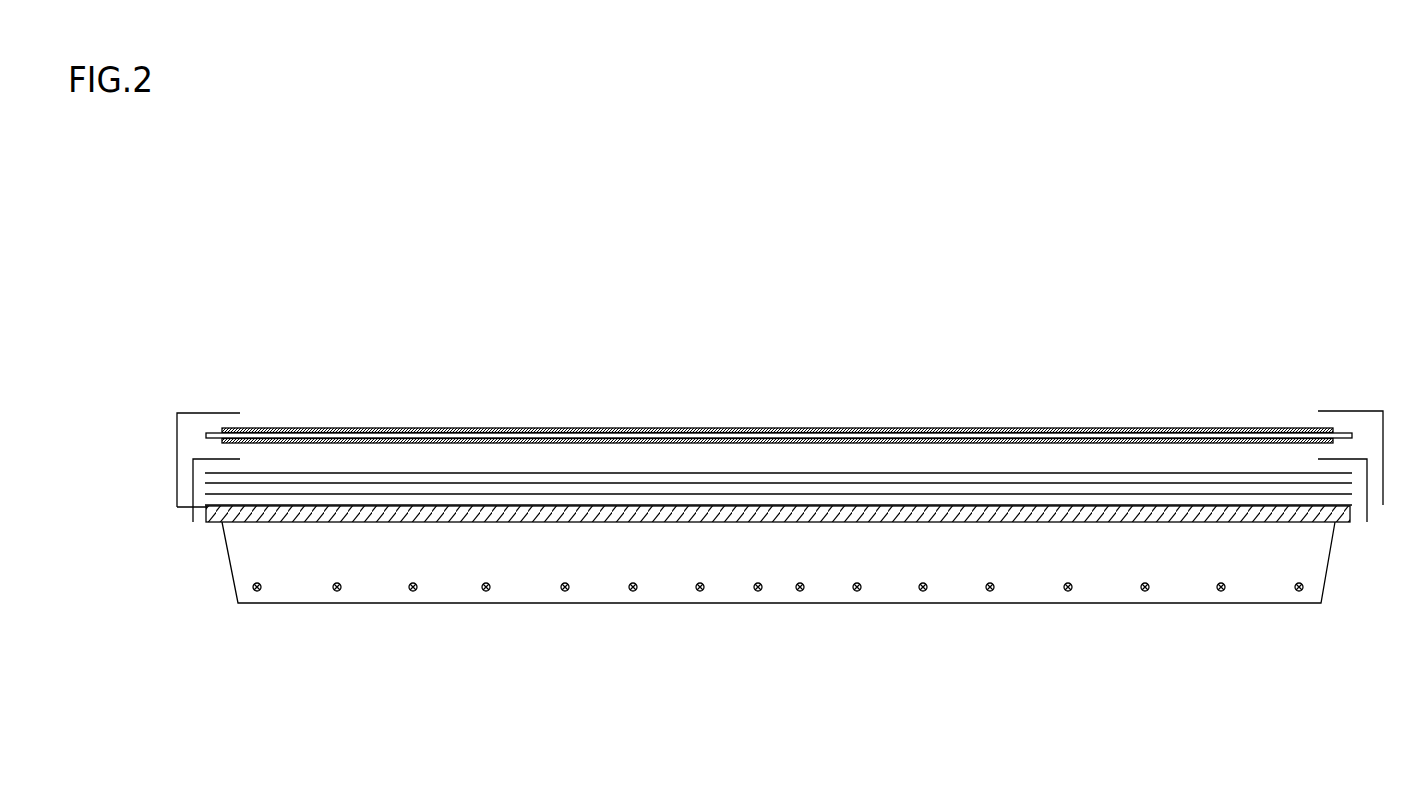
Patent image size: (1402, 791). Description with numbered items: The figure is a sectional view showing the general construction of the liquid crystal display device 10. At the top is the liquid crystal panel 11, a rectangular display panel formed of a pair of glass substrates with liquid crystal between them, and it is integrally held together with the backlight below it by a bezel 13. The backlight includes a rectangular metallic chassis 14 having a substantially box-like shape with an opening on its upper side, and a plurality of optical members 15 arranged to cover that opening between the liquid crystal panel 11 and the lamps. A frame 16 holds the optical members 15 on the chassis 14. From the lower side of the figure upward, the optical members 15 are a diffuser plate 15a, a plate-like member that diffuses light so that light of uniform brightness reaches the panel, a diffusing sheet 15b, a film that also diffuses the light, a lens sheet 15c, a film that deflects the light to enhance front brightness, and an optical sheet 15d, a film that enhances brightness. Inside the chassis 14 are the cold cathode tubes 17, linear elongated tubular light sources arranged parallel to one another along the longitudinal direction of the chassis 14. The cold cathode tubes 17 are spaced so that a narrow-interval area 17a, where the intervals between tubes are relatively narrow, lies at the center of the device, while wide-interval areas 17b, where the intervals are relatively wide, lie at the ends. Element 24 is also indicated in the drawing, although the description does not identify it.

The liquid crystal display device 10 is at (549, 376).
The liquid crystal panel 11 is at (437, 428).
The bezel 13 is at (212, 413).
The chassis 14 is at (227, 554).
The optical members 15 is at (933, 350).
The diffuser plate 15a is at (653, 505).
The diffusing sheet 15b is at (712, 494).
The lens sheet 15c is at (775, 483).
The optical sheet 15d is at (853, 475).
The frame 16 is at (199, 459).
The cold cathode tubes 17 is at (413, 583).
The narrow-interval area 17a is at (992, 639).
The wide-interval areas 17b is at (562, 639).
The support plate 24 is at (296, 543).